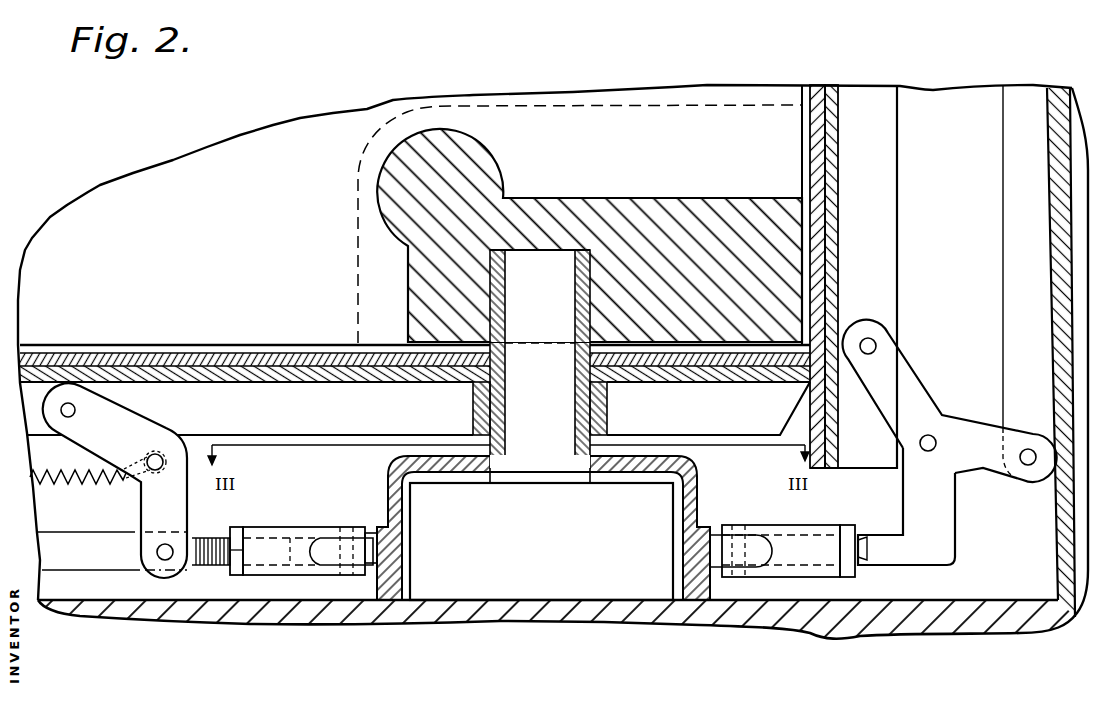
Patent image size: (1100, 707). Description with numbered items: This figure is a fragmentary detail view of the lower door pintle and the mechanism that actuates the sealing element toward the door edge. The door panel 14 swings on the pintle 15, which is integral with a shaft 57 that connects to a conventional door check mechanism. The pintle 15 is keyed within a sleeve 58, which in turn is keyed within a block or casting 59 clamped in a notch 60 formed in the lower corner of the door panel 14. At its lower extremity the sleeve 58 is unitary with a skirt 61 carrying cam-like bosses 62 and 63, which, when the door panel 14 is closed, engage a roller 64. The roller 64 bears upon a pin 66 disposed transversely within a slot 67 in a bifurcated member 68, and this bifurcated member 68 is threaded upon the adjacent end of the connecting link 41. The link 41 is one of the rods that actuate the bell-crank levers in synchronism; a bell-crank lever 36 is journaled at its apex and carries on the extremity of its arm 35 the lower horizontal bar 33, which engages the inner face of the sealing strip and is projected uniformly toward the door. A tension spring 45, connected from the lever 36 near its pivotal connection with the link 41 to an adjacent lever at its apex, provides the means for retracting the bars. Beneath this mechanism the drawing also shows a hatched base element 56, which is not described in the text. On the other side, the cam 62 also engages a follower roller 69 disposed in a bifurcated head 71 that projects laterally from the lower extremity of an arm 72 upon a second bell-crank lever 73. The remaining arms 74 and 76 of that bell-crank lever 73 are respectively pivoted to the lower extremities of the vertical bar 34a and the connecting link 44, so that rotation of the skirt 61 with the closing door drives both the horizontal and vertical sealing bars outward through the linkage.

The door panel 14 is at (238, 245).
The pintle 15 is at (548, 262).
The lower horizontal bar 33 is at (381, 417).
The vertical bar 34a is at (880, 296).
The arm 35 is at (117, 412).
The bell-crank lever 36 is at (189, 502).
The connecting link 41 is at (67, 563).
The connecting link 44 is at (1013, 195).
The tension spring 45 is at (70, 485).
The base plate 56 is at (545, 602).
The shaft 57 is at (537, 457).
The sleeve 58 is at (592, 450).
The block or casting 59 is at (785, 242).
The notch 60 is at (408, 247).
The skirt 61 is at (392, 488).
The cam-like boss 62 is at (695, 552).
The cam-like boss 63 is at (396, 567).
The roller 64 is at (370, 548).
The pin 66 is at (313, 578).
The slot 67 is at (320, 538).
The bifurcated member 68 is at (262, 578).
The follower roller 69 is at (753, 540).
The bifurcated head 71 is at (802, 526).
The arm 72 is at (948, 520).
The bell-crank lever 73 is at (932, 391).
The arm 74 is at (905, 354).
The arm 76 is at (985, 466).